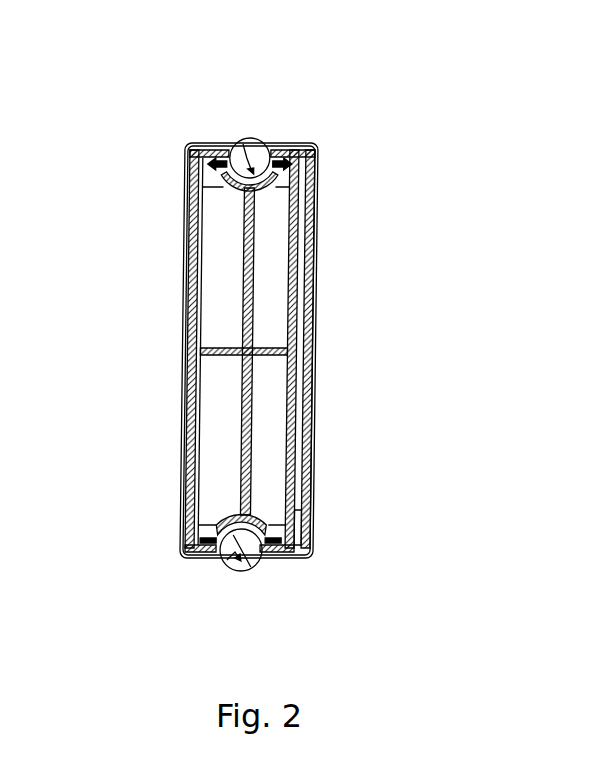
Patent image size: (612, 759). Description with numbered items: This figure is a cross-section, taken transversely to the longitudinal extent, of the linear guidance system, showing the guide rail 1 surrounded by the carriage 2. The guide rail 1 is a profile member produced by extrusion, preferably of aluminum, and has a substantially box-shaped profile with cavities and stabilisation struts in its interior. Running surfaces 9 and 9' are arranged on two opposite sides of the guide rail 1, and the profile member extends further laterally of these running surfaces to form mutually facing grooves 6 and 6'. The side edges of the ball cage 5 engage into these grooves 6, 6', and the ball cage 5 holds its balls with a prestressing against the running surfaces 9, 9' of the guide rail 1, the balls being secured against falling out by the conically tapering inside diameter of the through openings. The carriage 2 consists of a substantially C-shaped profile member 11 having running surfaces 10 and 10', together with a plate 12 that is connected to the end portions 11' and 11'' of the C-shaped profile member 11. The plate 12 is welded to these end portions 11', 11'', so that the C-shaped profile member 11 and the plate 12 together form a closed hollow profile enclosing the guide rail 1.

The guide rail 1 is at (197, 430).
The carriage 2 is at (181, 178).
The ball cage 5 is at (268, 170).
The groove 6 is at (172, 114).
The groove 6' is at (369, 175).
The running surface 9 is at (306, 107).
The running surface 9' is at (294, 581).
The running surface 10 is at (203, 99).
The running surface 10' is at (189, 611).
The C-shaped profile member 11 is at (127, 349).
The end portion 11' is at (370, 116).
The end portion 11'' is at (368, 552).
The plate 12 is at (313, 352).